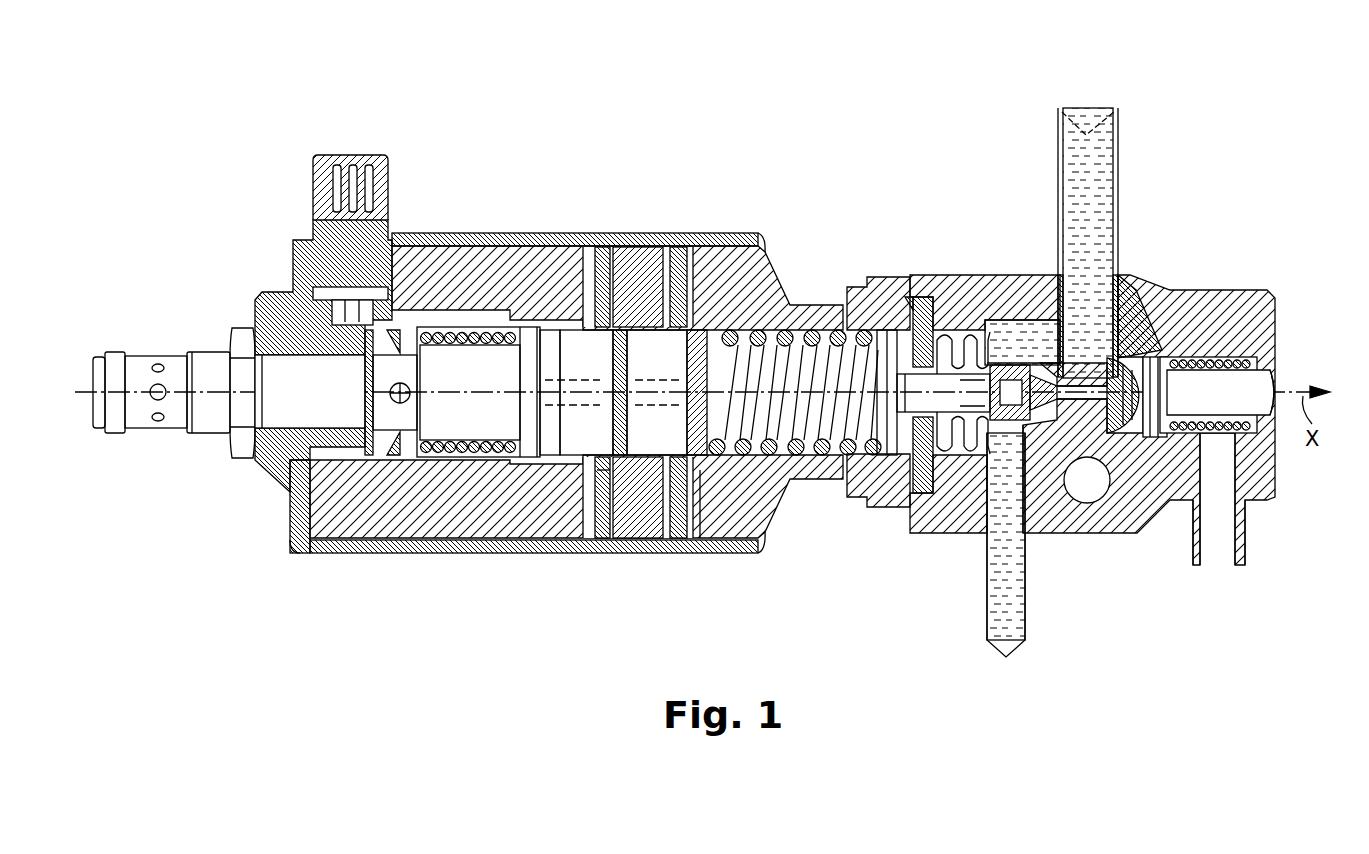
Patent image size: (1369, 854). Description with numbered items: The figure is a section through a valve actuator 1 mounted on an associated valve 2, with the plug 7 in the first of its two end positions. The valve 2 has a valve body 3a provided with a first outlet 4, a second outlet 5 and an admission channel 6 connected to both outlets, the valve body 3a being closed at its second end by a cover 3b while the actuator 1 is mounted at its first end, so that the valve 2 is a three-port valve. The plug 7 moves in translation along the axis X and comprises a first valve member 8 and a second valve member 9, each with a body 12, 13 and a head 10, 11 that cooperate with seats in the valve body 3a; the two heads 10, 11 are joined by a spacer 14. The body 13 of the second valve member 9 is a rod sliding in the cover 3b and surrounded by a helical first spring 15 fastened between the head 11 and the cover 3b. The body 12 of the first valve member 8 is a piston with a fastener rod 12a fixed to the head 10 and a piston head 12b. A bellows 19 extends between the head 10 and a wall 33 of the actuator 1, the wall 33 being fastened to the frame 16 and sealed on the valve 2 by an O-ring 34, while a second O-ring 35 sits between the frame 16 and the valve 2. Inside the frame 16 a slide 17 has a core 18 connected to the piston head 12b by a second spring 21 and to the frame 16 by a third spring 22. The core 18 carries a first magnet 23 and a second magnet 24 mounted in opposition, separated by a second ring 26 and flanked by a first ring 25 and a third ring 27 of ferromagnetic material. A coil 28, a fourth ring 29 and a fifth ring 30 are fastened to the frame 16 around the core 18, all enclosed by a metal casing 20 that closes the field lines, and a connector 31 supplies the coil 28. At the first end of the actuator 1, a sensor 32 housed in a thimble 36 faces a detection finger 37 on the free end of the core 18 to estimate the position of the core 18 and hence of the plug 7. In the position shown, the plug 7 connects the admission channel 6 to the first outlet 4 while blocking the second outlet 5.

The valve actuator 1 is at (686, 92).
The valve 2 is at (1186, 192).
The valve body 3a is at (968, 300).
The cover 3b is at (1218, 305).
The first outlet 4 is at (1030, 535).
The second outlet 5 is at (1216, 560).
The admission channel 6 is at (1132, 290).
The plug 7 is at (1047, 300).
The first valve member 8 is at (1020, 330).
The second valve member 9 is at (1182, 435).
The head of first valve member 10 is at (1092, 503).
The head of second valve member 11 is at (1160, 440).
The body of first valve member 12 is at (937, 412).
The fastener rod 12a is at (957, 450).
The piston head 12b is at (890, 470).
The body of second valve member 13 is at (1276, 383).
The spacer 14 is at (1125, 435).
The first spring 15 is at (1225, 355).
The frame 16 is at (479, 198).
The slide 17 is at (760, 245).
The core 18 is at (587, 455).
The bellows 19 is at (985, 330).
The casing 20 is at (444, 232).
The second spring 21 is at (815, 480).
The third spring 22 is at (470, 455).
The first magnet 23 is at (602, 540).
The second magnet 24 is at (670, 540).
The first ring 25 is at (575, 425).
The second ring 26 is at (633, 540).
The third ring 27 is at (704, 540).
The coil 28 is at (652, 240).
The fourth ring 29 is at (601, 240).
The fifth ring 30 is at (690, 240).
The connector 31 is at (362, 152).
The sensor 32 is at (205, 365).
The wall 33 is at (925, 298).
The O-ring 34 is at (985, 560).
The second O-ring 35 is at (905, 296).
The thimble 36 is at (280, 290).
The detection finger 37 is at (380, 480).